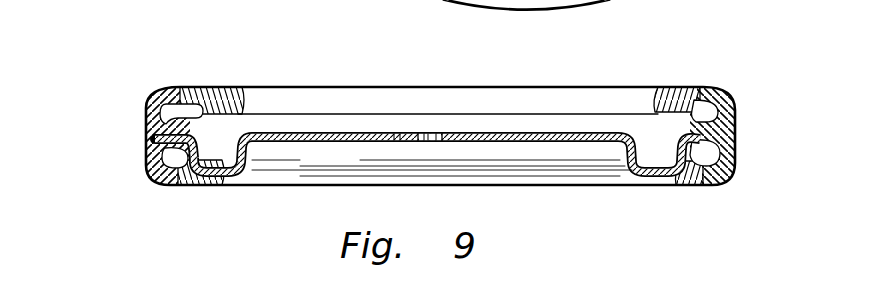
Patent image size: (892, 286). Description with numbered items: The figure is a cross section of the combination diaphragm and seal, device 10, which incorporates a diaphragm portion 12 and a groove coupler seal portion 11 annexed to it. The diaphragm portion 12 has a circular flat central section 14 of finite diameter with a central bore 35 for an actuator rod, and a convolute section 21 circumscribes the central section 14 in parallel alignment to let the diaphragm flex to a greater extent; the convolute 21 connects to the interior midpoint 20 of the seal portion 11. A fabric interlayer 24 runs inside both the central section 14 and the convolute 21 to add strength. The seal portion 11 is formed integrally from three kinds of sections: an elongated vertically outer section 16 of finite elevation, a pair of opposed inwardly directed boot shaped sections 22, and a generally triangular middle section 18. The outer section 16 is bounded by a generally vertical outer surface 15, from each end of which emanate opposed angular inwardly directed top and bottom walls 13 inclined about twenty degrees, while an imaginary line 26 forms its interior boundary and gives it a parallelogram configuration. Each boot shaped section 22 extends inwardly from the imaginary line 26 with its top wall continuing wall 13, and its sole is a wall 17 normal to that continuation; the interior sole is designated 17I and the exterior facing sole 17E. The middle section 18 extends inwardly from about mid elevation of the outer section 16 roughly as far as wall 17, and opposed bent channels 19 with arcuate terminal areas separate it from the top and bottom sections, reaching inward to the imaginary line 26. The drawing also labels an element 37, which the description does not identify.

The device 10 is at (143, 50).
The groove coupler seal portion 11 is at (115, 196).
The diaphragm portion 12 is at (492, 135).
The top and bottom walls 13 is at (160, 90).
The central section 14 is at (372, 142).
The outer surface 15 is at (127, 138).
The outer section 16 is at (144, 155).
The wall 17 is at (722, 92).
The exterior facing boot wall 17E is at (696, 90).
The interior boot wall 17I is at (692, 168).
The middle section 18 is at (212, 122).
The bent channels 19 is at (207, 95).
The interior midpoint 20 is at (680, 133).
The convolute section 21 is at (247, 168).
The boot shaped sections 22 is at (170, 184).
The fabric interlayer 24 is at (487, 142).
The imaginary line 26 is at (388, 133).
The central bore 35 is at (432, 133).
The membrane end portion 37 is at (330, 133).